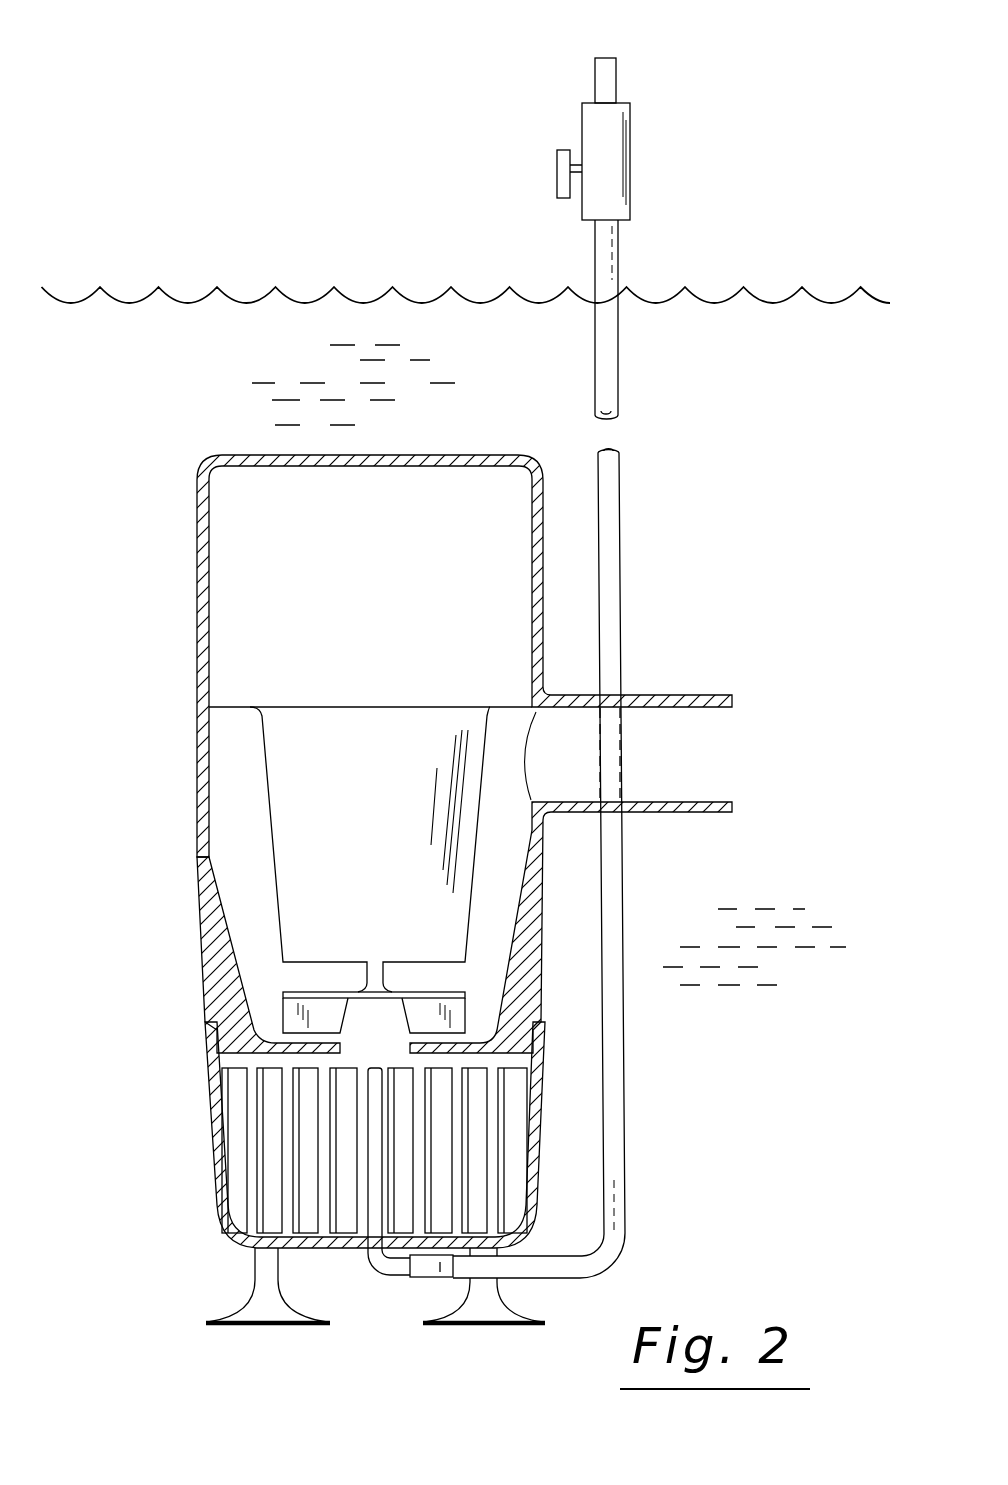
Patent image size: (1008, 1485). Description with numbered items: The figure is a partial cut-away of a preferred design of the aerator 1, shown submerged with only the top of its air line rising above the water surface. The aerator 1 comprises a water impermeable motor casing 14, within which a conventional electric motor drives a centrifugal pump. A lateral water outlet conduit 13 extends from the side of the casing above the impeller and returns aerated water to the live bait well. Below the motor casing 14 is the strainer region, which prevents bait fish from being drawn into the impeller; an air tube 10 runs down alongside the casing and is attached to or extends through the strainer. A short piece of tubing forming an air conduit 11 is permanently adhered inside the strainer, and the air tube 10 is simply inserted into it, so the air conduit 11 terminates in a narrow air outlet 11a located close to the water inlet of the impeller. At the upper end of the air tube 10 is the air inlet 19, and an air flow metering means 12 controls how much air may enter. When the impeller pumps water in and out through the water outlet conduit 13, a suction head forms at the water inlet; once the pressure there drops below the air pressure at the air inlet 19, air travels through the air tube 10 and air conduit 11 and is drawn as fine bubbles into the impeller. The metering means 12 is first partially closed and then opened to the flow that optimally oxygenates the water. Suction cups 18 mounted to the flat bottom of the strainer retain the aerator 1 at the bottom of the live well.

The aerator 1 is at (220, 676).
The air tube 10 is at (620, 1075).
The air conduit 11 is at (371, 1262).
The air outlet 11a is at (373, 1068).
The air flow metering means 12 is at (632, 174).
The water outlet conduit 13 is at (732, 718).
The motor casing 14 is at (197, 532).
The suction cup 18 is at (250, 1298).
The air inlet 19 is at (606, 62).